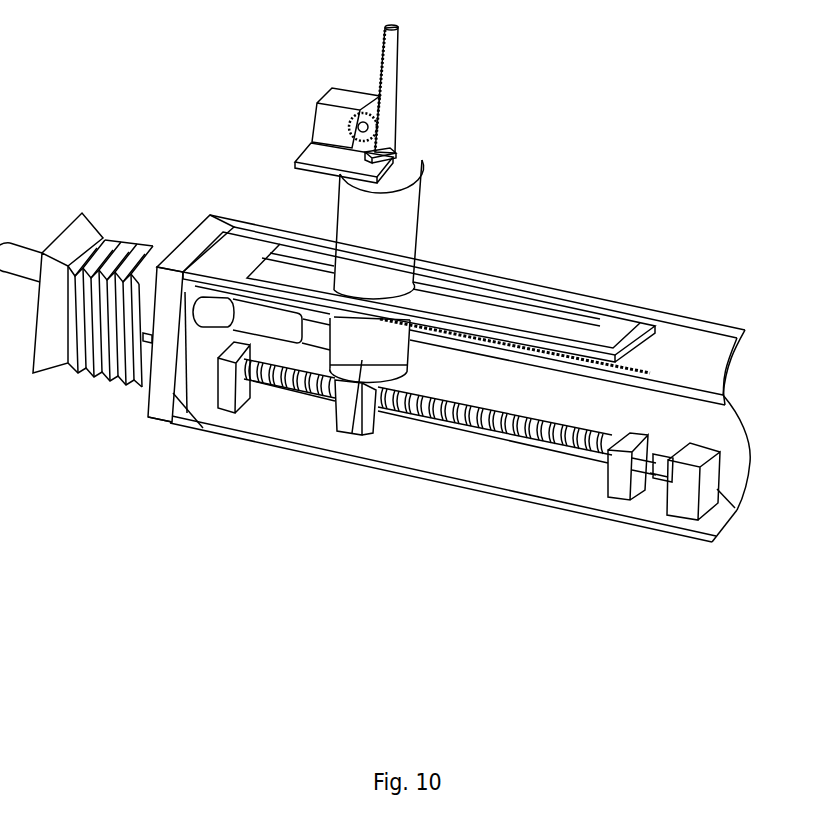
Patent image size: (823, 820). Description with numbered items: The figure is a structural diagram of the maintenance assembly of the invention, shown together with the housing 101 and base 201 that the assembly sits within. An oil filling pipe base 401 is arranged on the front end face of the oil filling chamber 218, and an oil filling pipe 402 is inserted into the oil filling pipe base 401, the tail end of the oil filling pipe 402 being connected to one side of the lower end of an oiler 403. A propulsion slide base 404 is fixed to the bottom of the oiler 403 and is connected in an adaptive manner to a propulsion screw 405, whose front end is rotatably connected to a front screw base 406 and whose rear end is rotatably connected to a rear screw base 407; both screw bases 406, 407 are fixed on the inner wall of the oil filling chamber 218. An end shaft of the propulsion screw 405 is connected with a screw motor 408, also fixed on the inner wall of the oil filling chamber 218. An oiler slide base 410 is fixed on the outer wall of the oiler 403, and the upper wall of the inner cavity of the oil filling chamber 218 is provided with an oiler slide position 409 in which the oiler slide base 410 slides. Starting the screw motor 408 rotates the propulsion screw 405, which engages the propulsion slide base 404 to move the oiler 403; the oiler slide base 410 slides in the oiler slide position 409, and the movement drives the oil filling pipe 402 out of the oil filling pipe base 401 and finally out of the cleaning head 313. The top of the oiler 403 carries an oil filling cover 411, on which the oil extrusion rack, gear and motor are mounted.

The housing 101 is at (668, 322).
The base plate 201 is at (602, 512).
The oil filling chamber 218 is at (507, 478).
The cleaning head 313 is at (87, 232).
The oil filling pipe base 401 is at (217, 307).
The oil filling pipe 402 is at (263, 322).
The oiler 403 is at (365, 360).
The propulsion slide base 404 is at (350, 433).
The propulsion screw 405 is at (303, 362).
The front screw base 406 is at (222, 393).
The rear screw base 407 is at (625, 498).
The screw motor 408 is at (690, 498).
The oiler slide position 409 is at (576, 322).
The oiler slide base 410 is at (420, 277).
The oil filling cover 411 is at (390, 190).